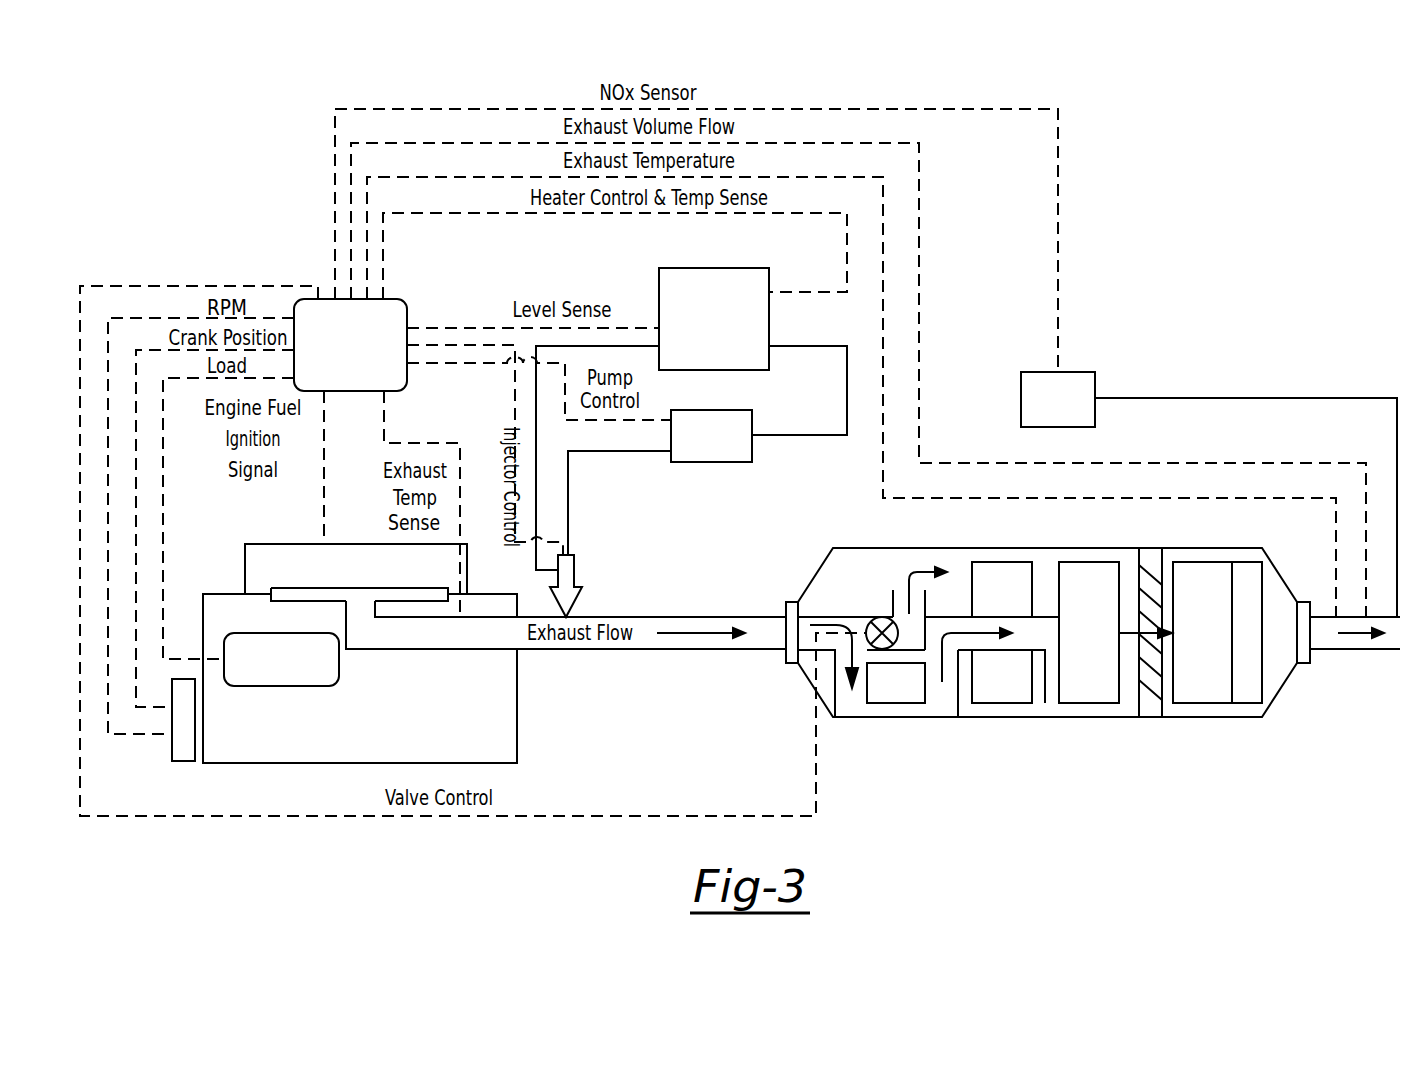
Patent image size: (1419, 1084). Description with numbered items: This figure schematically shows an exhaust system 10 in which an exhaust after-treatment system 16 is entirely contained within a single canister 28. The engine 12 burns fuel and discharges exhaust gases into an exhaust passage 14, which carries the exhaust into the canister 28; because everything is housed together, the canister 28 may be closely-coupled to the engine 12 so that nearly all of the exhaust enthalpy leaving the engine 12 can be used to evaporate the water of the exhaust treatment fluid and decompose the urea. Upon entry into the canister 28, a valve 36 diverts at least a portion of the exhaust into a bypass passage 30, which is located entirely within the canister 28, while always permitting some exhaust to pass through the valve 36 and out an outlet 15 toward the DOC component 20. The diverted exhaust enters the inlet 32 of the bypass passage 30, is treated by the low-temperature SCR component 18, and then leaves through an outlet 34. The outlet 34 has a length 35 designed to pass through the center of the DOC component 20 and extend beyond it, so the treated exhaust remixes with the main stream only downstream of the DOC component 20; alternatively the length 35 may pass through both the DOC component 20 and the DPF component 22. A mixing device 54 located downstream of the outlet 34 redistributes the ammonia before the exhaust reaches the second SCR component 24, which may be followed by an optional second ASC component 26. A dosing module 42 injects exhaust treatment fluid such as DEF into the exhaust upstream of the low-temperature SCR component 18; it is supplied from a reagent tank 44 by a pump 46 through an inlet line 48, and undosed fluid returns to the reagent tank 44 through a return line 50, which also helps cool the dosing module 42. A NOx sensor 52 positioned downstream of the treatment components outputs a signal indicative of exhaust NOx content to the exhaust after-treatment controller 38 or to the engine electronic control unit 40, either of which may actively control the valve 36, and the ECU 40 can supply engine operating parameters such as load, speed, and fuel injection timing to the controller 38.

The exhaust system 10 is at (246, 145).
The engine 12 is at (277, 763).
The exhaust passage 14 is at (560, 650).
The outlet 15 is at (927, 597).
The exhaust after-treatment system 16 is at (1260, 750).
The low-temperature SCR component 18 is at (892, 693).
The DOC component 20 is at (997, 693).
The diesel particulate filter (DPF) component 22 is at (1079, 648).
The second SCR component 24 is at (1192, 648).
The second ASC component 26 is at (1247, 680).
The canister 28 is at (1157, 717).
The bypass passage 30 is at (862, 728).
The inlet 32 is at (850, 698).
The outlet 34 is at (940, 707).
The length 35 is at (1038, 650).
The valve 36 is at (867, 628).
The exhaust after-treatment controller 38 is at (392, 301).
The electronic control unit (ECU) 40 is at (290, 686).
The dosing module 42 is at (575, 572).
The reagent tank 44 is at (742, 268).
The pump 46 is at (712, 462).
The inlet line 48 is at (568, 478).
The return line 50 is at (630, 345).
The NOx sensor 52 is at (1079, 372).
The mixing device 54 is at (1152, 577).